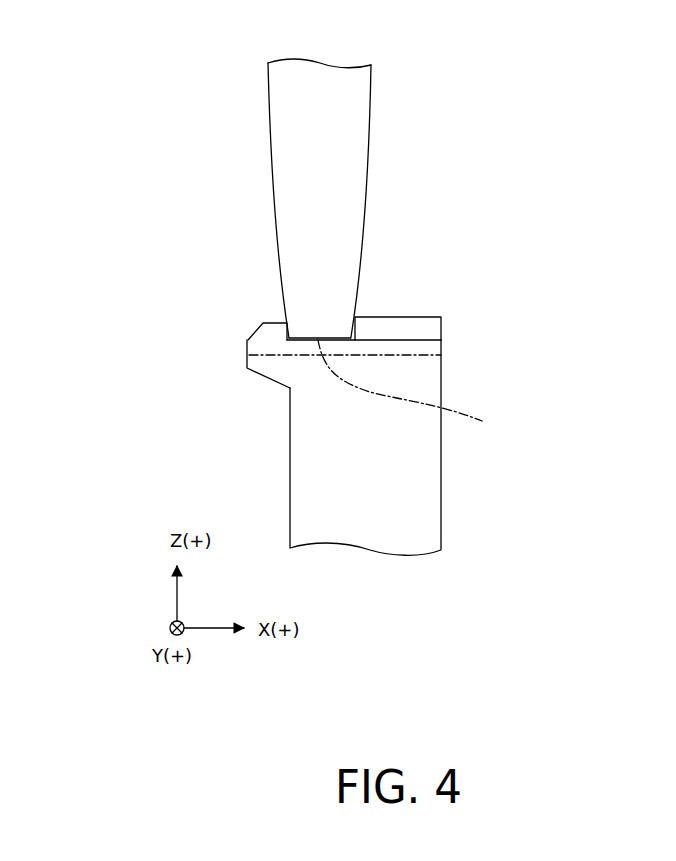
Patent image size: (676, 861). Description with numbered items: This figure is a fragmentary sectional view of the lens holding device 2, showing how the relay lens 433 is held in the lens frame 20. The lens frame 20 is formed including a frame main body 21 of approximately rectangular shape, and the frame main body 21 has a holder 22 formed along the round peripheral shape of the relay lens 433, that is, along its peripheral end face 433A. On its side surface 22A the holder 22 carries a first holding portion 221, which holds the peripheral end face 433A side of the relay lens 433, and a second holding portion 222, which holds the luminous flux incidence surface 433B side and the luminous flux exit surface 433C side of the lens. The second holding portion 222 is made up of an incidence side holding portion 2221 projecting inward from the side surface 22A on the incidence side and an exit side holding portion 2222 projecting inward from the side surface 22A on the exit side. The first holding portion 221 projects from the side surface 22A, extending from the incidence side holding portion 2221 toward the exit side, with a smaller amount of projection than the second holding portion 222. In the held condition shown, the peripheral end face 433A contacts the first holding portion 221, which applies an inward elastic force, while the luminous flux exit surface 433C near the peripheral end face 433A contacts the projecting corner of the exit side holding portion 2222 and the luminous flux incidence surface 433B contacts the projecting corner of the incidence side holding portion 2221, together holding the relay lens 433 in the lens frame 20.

The lens holding device 2 is at (532, 115).
The lens frame 20 is at (379, 418).
The frame main body 21 is at (427, 505).
The holder 22 is at (379, 357).
The first holding portion 221 is at (398, 341).
The second holding portion 222 is at (348, 313).
The incidence side holding portion 2221 is at (257, 330).
The exit side holding portion 2222 is at (398, 318).
The side surface 22A is at (424, 386).
The relay lens 433 is at (324, 184).
The peripheral end face 433A is at (318, 338).
The luminous flux incidence surface 433B is at (272, 202).
The luminous flux exit surface 433C is at (368, 195).